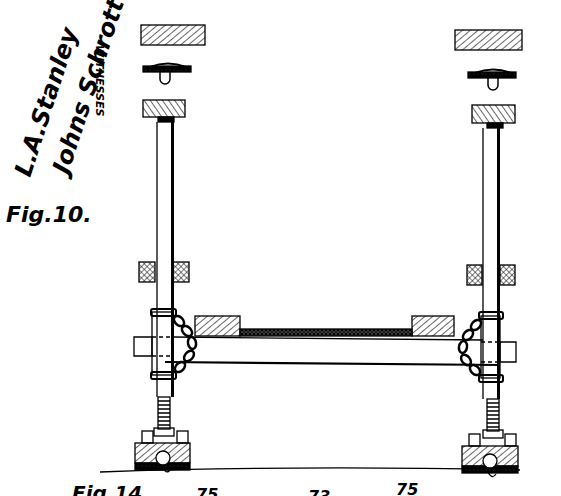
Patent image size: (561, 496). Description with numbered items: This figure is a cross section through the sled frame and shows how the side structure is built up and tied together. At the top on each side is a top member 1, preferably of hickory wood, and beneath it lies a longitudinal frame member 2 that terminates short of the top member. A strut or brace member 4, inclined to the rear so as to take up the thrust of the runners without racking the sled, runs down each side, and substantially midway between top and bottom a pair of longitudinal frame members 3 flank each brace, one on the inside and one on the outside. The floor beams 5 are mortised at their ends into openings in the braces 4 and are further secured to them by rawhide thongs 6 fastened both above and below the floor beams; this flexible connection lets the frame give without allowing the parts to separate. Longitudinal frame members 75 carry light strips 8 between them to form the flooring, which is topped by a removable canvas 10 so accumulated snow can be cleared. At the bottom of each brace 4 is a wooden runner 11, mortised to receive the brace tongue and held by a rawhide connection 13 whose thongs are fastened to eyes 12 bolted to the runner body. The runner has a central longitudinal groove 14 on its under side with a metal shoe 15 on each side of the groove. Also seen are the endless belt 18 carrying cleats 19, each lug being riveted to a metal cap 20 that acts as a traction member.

The top member 1 is at (205, 35).
The longitudinal frame member 2 is at (185, 107).
The longitudinal frame member 3 is at (141, 263).
The strut or brace member 4 is at (186, 221).
The floor beam 5 is at (253, 346).
The rawhide thong 6 is at (178, 316).
The light strip 8 is at (322, 365).
The canvas 10 is at (296, 330).
The runner 11 is at (135, 447).
The eye 12 is at (153, 431).
The threaded rod 13 is at (171, 412).
The central longitudinal groove 14 is at (189, 441).
The metal shoe 15 is at (135, 464).
The endless belt 18 is at (191, 70).
The cleat 19 is at (180, 64).
The metal cap 20 is at (170, 80).
The frame member 75 is at (228, 312).